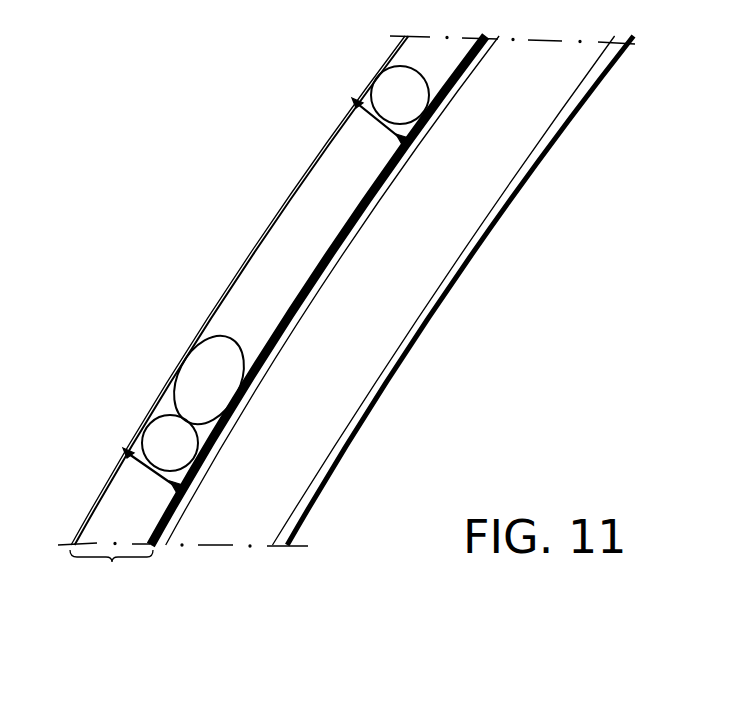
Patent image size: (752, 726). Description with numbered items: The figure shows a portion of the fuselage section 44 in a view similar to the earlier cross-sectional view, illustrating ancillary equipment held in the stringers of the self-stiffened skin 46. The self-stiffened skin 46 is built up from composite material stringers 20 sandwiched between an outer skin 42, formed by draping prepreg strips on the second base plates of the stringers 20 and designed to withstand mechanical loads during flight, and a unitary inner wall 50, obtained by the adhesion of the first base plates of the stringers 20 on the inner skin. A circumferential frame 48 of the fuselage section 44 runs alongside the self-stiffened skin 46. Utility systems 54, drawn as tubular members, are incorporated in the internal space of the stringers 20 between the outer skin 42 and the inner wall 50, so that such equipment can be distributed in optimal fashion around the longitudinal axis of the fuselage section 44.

The fuselage section 44 is at (162, 142).
The outer skin 42 is at (297, 180).
The inner wall 50 is at (330, 248).
The circumferential frame 48 is at (507, 143).
The utility system 54 is at (420, 67).
The stringer 20 is at (375, 122).
The self-stiffened skin 46 is at (111, 568).